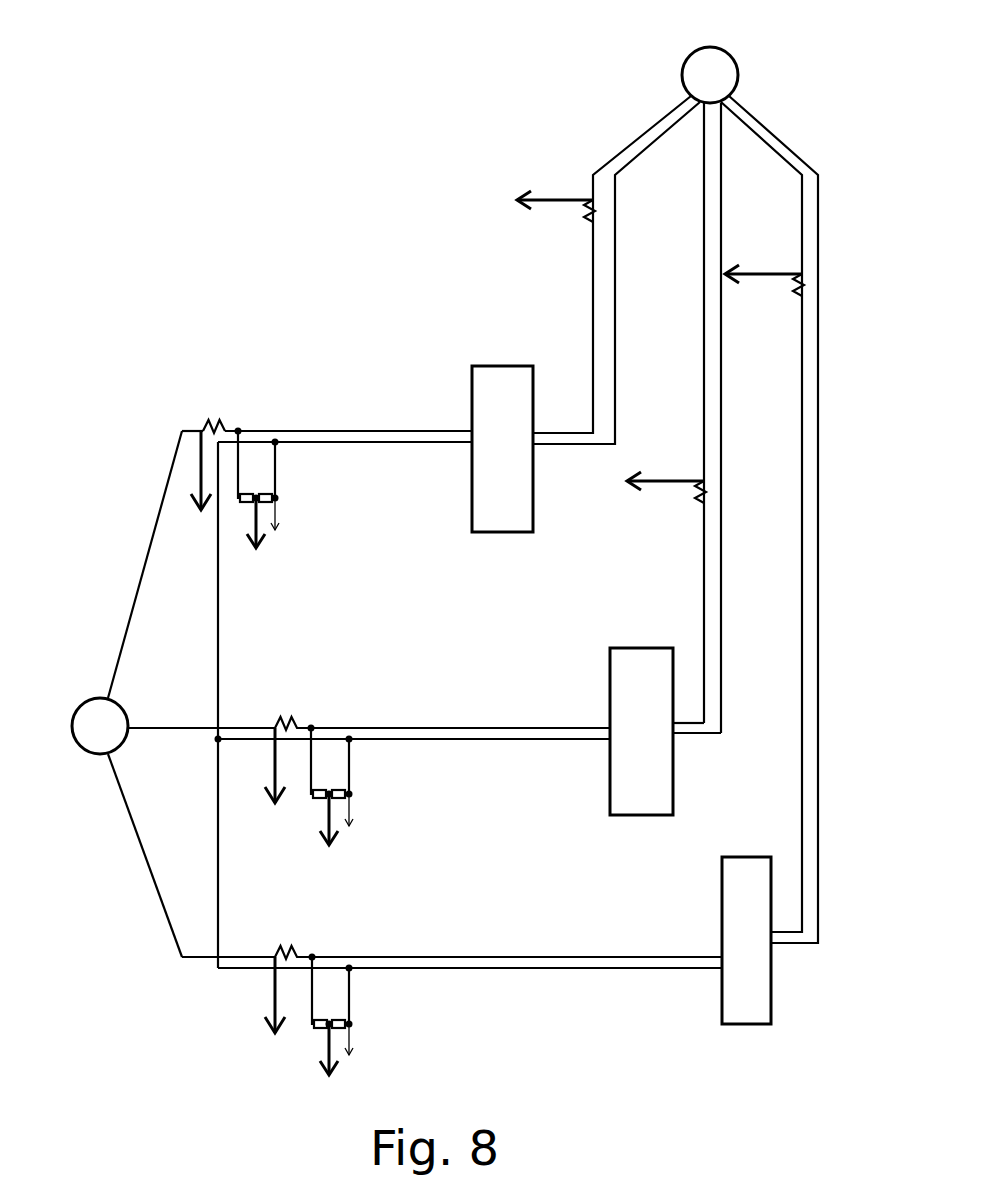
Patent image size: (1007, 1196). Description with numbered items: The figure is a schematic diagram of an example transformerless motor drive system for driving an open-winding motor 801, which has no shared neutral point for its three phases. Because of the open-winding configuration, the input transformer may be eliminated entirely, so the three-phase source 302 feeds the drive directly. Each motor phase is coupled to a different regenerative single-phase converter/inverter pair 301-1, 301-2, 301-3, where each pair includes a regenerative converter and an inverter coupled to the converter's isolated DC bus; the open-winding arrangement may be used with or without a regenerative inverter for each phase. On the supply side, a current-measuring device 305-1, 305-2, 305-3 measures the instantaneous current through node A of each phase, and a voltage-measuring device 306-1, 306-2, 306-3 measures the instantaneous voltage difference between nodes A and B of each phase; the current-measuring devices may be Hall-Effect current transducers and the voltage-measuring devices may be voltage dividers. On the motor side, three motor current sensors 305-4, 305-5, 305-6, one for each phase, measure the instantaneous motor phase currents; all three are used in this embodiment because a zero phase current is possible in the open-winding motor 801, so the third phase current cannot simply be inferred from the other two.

The open-winding motor 801 is at (713, 47).
The three-phase source 302 is at (92, 700).
The regenerative single-phase converter/inverter pair 301-1 is at (503, 366).
The regenerative single-phase converter/inverter pair 301-2 is at (641, 648).
The regenerative single-phase converter/inverter pair 301-3 is at (743, 857).
The current-measuring device 305-1 is at (215, 425).
The current-measuring device 305-2 is at (290, 718).
The current-measuring device 305-3 is at (290, 948).
The motor current sensor 305-4 is at (585, 222).
The motor current sensor 305-5 is at (800, 296).
The motor current sensor 305-6 is at (699, 502).
The voltage-measuring device 306-1 is at (284, 498).
The voltage-measuring device 306-2 is at (360, 794).
The voltage-measuring device 306-3 is at (360, 1024).